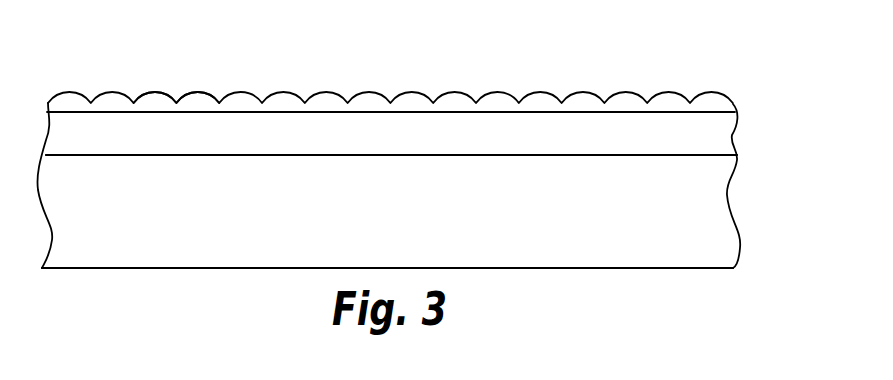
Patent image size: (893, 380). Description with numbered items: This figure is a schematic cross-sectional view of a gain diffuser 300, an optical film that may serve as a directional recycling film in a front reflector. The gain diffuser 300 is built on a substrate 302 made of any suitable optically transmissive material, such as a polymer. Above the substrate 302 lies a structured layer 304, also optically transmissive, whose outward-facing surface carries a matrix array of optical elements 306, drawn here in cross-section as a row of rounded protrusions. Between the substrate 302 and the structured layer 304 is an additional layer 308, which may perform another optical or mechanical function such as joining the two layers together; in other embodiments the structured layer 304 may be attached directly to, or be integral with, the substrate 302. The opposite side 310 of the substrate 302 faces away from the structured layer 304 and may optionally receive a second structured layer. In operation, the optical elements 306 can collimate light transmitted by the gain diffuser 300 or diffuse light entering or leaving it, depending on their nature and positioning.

The gain diffuser 300 is at (684, 46).
The substrate 302 is at (724, 220).
The structured layer 304 is at (538, 103).
The optical elements 306 is at (192, 92).
The additional layer 308 is at (725, 140).
The opposite side 310 is at (195, 269).